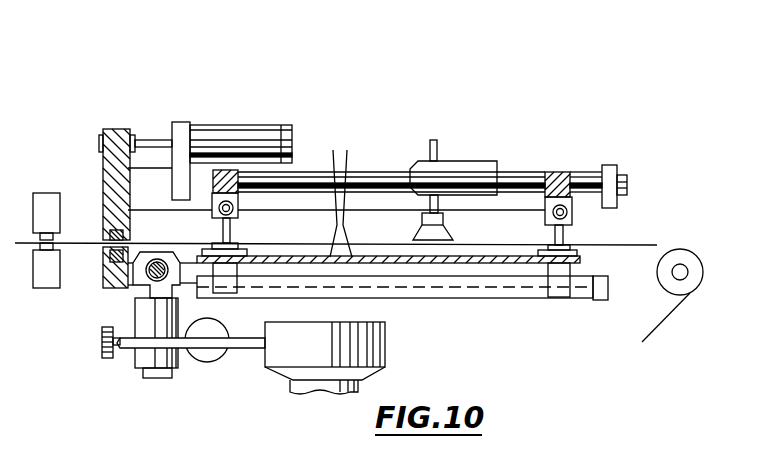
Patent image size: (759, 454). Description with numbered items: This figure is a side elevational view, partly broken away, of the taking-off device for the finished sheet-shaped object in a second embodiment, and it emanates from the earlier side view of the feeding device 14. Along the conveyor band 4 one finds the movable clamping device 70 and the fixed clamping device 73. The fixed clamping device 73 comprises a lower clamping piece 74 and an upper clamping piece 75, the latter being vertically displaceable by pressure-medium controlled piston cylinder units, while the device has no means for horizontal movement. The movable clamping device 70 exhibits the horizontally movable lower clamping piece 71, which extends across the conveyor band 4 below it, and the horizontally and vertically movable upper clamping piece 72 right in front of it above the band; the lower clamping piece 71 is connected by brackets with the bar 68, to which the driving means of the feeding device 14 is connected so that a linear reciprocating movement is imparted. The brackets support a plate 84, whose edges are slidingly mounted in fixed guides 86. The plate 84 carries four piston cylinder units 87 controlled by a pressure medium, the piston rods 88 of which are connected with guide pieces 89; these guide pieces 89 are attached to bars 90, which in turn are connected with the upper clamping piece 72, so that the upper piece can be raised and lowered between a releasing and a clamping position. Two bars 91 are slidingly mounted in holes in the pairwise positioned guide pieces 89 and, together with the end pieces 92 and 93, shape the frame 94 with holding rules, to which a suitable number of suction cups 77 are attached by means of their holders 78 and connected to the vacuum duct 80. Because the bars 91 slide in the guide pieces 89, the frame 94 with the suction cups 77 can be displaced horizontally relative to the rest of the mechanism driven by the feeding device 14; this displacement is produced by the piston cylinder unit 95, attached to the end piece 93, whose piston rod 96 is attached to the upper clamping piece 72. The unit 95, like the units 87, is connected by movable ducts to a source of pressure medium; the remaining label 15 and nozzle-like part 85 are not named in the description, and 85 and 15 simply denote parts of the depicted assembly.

The conveyor band 4 is at (622, 245).
The feeding device 14 is at (289, 393).
The wire feeding device 15 is at (423, 103).
The bar 68 is at (155, 277).
The movable clamping device 70 is at (117, 116).
The lower clamping piece 71 is at (115, 280).
The upper clamping piece 72 is at (108, 128).
The fixed clamping device 73 is at (36, 162).
The lower clamping piece 74 is at (47, 277).
The upper clamping piece 75 is at (48, 200).
The suction cups 77 is at (443, 233).
The holders 78 is at (445, 185).
The vacuum duct 80 is at (436, 138).
The plate 84 is at (347, 200).
The nozzle 85 is at (328, 270).
The fixed guides 86 is at (442, 296).
The piston cylinder units 87 is at (230, 277).
The piston rods 88 is at (563, 233).
The guide pieces 89 is at (233, 176).
The bars 90 is at (153, 180).
The bars 91 is at (383, 180).
The end piece 92 is at (613, 163).
The end piece 93 is at (187, 133).
The frame 94 is at (567, 173).
The piston cylinder unit 95 is at (300, 130).
The piston rod 96 is at (143, 137).